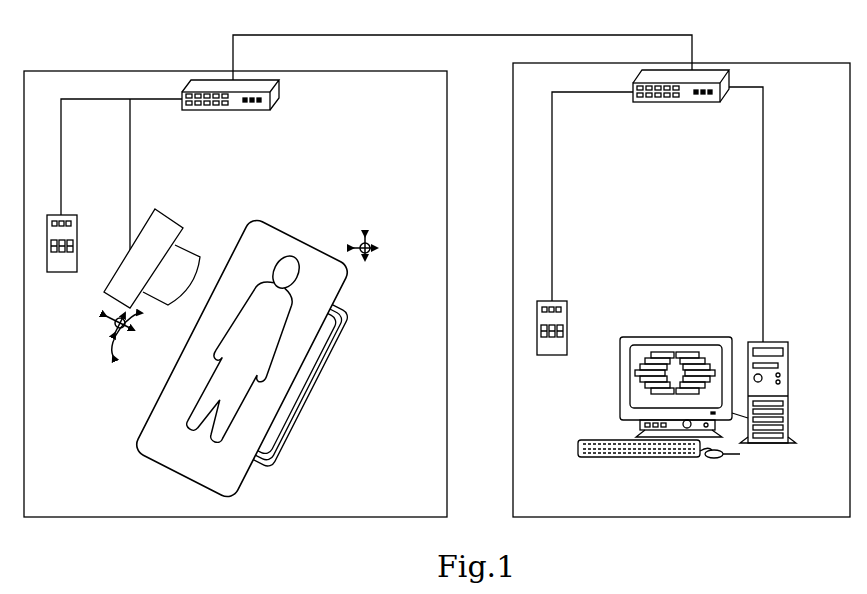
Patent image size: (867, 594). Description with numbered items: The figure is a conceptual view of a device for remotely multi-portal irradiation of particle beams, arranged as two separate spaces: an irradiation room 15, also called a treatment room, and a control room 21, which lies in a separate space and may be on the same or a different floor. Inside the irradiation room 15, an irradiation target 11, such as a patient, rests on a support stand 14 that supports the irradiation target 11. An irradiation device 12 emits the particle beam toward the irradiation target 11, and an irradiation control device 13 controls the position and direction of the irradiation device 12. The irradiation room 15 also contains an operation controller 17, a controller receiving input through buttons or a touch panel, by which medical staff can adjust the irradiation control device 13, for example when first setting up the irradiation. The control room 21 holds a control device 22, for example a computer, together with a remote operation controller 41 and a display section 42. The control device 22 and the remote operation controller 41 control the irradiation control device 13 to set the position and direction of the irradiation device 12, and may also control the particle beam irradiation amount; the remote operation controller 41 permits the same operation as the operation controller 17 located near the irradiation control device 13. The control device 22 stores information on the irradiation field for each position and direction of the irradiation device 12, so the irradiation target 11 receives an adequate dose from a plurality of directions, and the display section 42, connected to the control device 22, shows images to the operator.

The irradiation target 11 is at (288, 308).
The irradiation device 12 is at (181, 266).
The irradiation control device 13 is at (168, 222).
The support stand 14 is at (278, 232).
The irradiation room 15 is at (94, 74).
The operation controller 17 is at (70, 238).
The control room 21 is at (771, 70).
The control device 22 is at (785, 368).
The remote operation controller 41 is at (562, 322).
The display section 42 is at (685, 342).